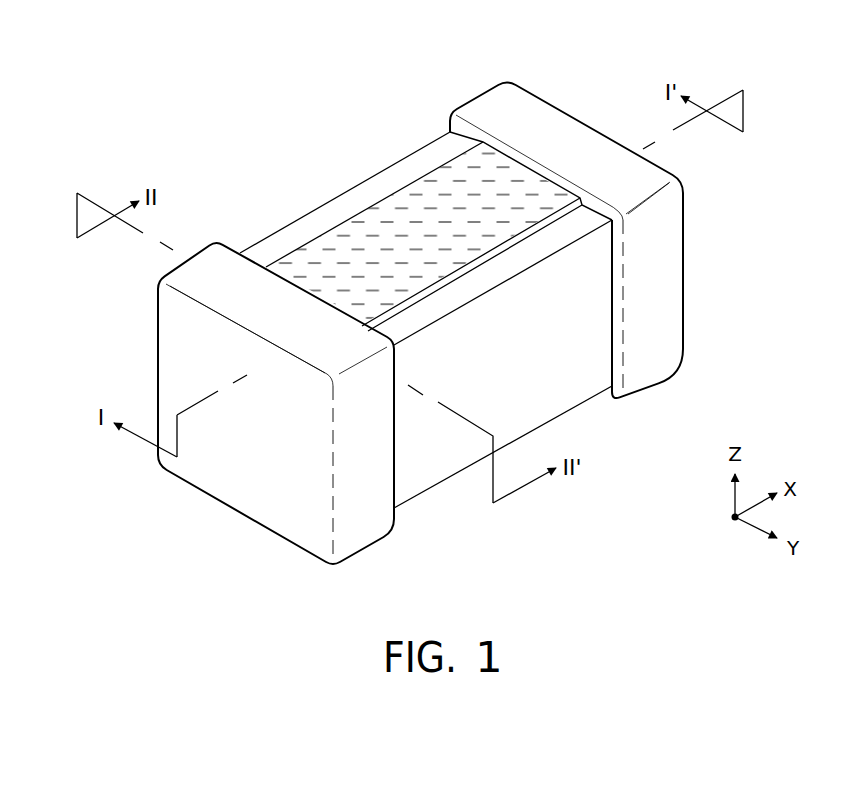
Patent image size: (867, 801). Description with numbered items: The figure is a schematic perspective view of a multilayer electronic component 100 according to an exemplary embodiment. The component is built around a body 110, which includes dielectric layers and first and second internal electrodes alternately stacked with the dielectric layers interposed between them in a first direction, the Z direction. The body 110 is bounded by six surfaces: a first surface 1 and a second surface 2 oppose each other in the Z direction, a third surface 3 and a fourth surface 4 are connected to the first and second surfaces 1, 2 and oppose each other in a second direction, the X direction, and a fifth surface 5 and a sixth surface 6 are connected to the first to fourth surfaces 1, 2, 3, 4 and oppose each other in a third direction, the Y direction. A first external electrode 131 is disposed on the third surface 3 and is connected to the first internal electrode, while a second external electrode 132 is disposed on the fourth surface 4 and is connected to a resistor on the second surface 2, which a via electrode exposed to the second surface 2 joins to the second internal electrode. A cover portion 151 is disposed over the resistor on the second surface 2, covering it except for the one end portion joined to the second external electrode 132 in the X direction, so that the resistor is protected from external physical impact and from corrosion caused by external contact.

The multilayer electronic component 100 is at (240, 65).
The body 110 is at (463, 316).
The first external electrode 131 is at (178, 357).
The second external electrode 132 is at (497, 107).
The cover portion 151 is at (443, 187).
The first surface 1 is at (430, 451).
The second surface 2 is at (334, 214).
The third surface 3 is at (256, 488).
The fourth surface 4 is at (653, 253).
The fifth surface 5 is at (558, 380).
The sixth surface 6 is at (297, 242).